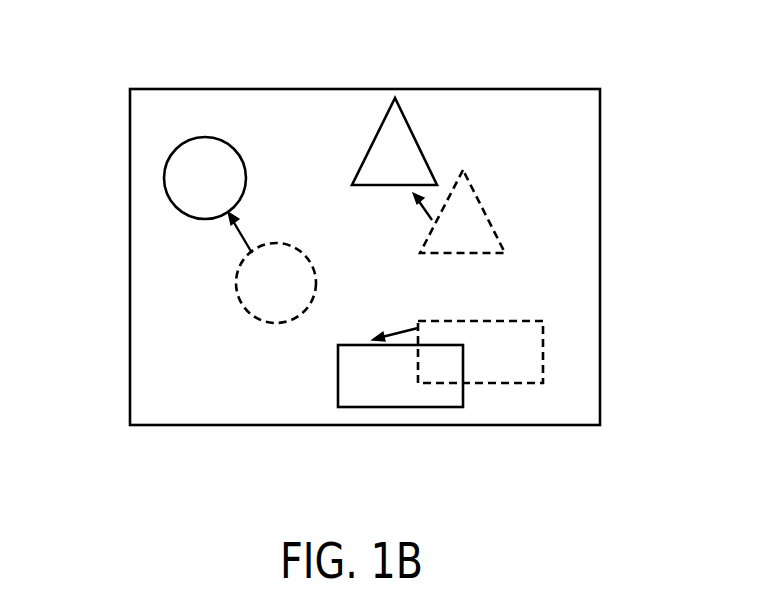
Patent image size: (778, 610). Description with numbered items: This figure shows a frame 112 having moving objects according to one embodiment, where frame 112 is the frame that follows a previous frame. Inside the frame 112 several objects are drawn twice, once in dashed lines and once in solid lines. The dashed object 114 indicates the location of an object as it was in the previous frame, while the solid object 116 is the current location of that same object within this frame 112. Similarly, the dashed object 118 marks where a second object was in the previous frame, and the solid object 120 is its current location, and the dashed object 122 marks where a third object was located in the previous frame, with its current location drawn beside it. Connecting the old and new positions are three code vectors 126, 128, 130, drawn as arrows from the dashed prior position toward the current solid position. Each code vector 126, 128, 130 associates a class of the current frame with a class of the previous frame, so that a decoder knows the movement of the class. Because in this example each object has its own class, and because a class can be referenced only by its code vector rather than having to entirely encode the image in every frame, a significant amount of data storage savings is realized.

The frame 112 is at (187, 89).
The object 114 is at (241, 302).
The object 116 is at (167, 162).
The object 118 is at (493, 227).
The object 120 is at (406, 122).
The object 122 is at (543, 340).
The code vector 126 is at (243, 230).
The code vector 128 is at (438, 206).
The code vector 130 is at (400, 333).